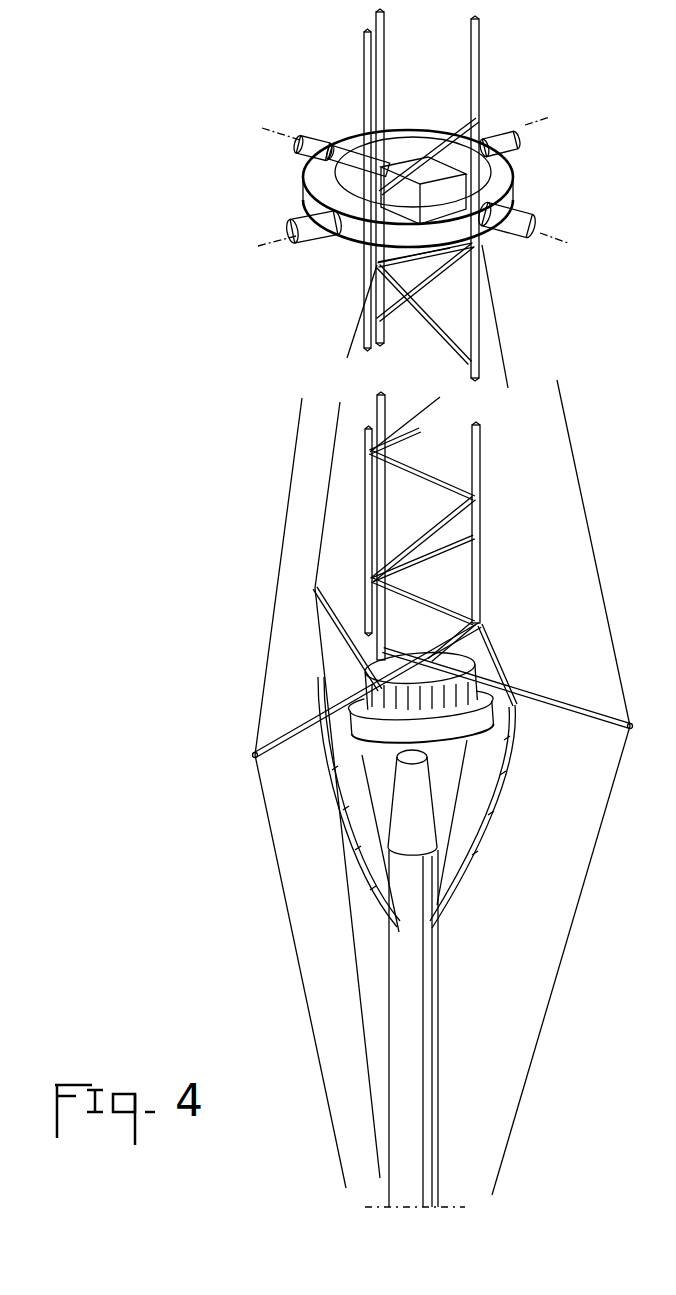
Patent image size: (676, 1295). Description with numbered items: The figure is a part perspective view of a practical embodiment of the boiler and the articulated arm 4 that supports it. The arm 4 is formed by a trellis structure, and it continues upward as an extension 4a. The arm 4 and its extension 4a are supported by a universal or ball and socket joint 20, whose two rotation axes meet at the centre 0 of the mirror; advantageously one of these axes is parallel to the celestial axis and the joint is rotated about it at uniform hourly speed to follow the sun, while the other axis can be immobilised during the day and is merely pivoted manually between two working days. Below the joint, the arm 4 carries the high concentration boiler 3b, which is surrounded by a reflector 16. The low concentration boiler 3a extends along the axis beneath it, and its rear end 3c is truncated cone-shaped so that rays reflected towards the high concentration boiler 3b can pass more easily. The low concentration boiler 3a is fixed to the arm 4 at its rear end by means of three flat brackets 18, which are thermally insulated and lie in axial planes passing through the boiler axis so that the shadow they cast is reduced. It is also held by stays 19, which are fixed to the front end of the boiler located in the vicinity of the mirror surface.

The extension of the arm 4a is at (477, 52).
The centre of the mirror 0 is at (413, 136).
The universal or ball and socket joint 20 is at (512, 204).
The articulated arm 4 is at (480, 478).
The high concentration boiler 3b is at (477, 672).
The reflector 16 is at (486, 716).
The flat brackets 18 is at (480, 792).
The rear end of the low concentration boiler 3c is at (417, 820).
The low concentration boiler 3a is at (412, 1054).
The stays 19 is at (566, 954).